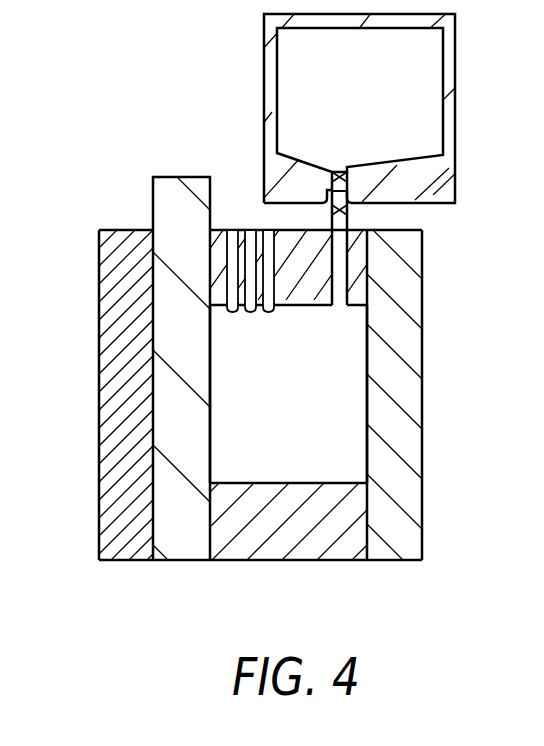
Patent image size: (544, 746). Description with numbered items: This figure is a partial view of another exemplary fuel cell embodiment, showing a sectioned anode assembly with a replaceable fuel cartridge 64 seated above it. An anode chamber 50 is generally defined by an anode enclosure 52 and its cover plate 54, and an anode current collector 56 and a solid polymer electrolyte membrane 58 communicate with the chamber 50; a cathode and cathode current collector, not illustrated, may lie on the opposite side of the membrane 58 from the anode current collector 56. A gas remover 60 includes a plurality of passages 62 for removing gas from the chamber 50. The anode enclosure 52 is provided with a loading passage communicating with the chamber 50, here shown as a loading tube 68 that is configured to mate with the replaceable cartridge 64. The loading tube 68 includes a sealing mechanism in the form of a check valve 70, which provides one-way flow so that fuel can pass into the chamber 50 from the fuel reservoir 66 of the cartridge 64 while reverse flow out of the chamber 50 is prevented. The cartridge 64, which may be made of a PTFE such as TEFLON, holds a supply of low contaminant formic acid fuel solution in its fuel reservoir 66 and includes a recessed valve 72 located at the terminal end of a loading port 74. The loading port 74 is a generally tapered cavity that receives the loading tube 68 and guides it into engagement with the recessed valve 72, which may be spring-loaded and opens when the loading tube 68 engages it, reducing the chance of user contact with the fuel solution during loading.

The anode chamber 50 is at (302, 458).
The anode enclosure 52 is at (257, 533).
The cover plate 54 is at (395, 442).
The anode current collector 56 is at (180, 530).
The solid polymer electrolyte membrane 58 is at (113, 517).
The gas remover 60 is at (194, 241).
The passages 62 is at (281, 284).
The replaceable fuel cartridge 64 is at (457, 71).
The fuel reservoir 66 is at (402, 83).
The loading tube 68 is at (353, 264).
The check valve 70 is at (423, 183).
The recessed valve 72 is at (338, 170).
The loading port 74 is at (383, 210).